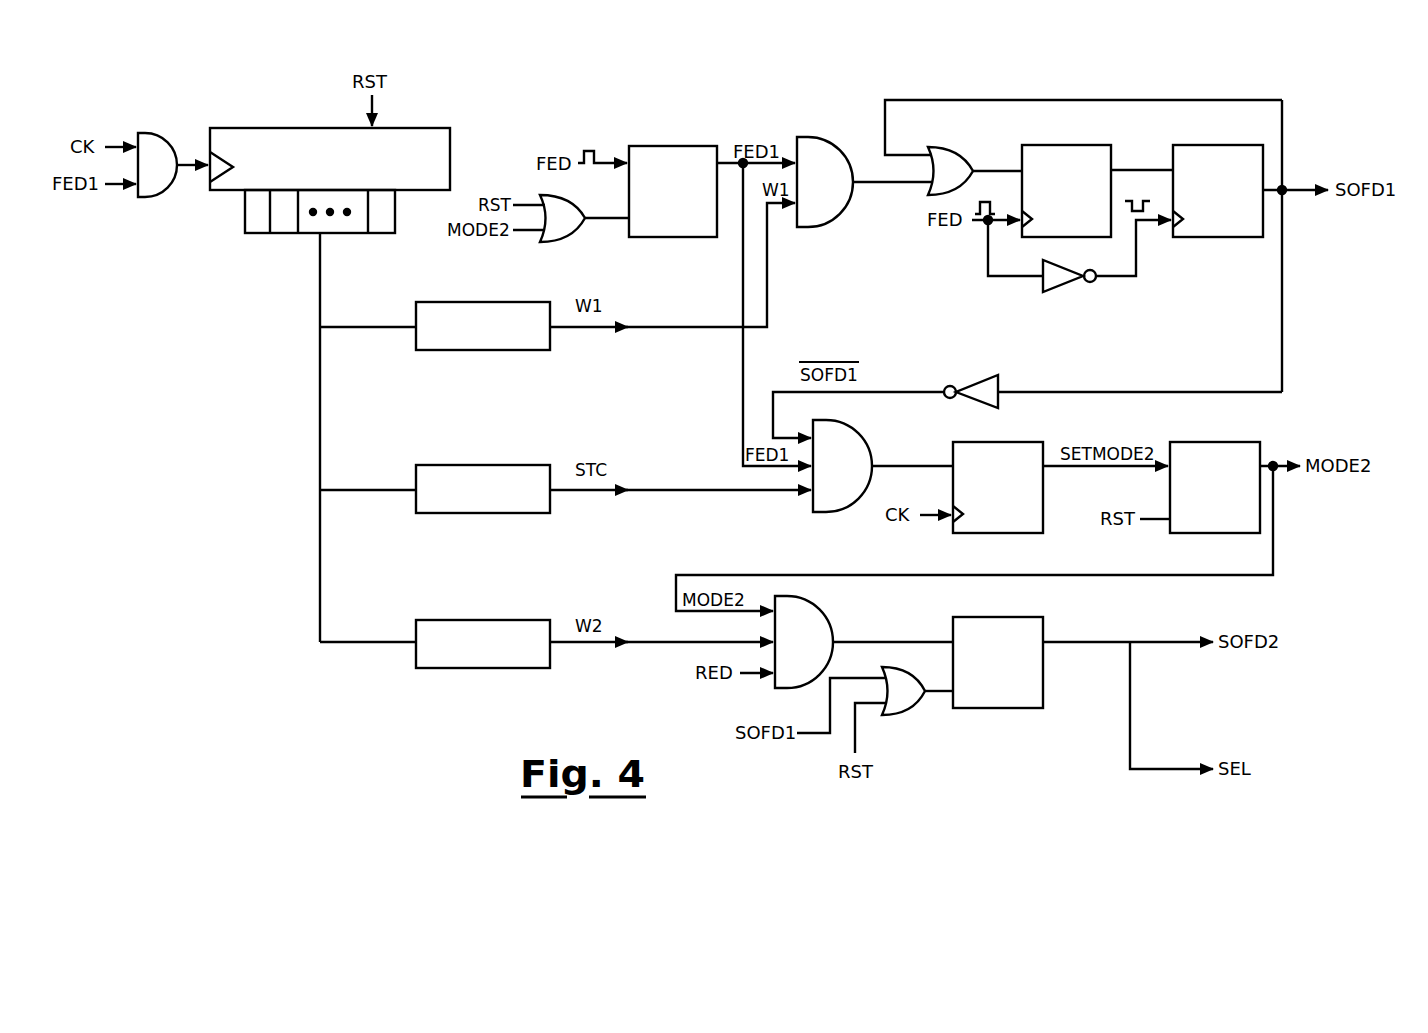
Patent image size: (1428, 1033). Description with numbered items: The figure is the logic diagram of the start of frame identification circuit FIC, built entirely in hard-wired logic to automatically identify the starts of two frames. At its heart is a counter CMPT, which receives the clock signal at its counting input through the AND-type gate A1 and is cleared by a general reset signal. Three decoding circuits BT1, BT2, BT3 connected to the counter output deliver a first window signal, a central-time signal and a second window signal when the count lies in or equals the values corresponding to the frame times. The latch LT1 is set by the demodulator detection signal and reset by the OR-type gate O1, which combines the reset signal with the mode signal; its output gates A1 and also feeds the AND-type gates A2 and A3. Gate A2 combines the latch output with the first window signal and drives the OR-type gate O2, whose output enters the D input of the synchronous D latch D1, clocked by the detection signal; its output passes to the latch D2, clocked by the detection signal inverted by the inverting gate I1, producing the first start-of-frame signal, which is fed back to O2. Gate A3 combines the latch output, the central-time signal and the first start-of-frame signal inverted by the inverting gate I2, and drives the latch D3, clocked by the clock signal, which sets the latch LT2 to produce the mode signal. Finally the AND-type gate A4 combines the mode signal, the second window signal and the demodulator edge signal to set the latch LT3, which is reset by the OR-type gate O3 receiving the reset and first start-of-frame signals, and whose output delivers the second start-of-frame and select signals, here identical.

The AND-type gate A1 is at (157, 165).
The counter CMPT is at (330, 180).
The latch LT1 is at (673, 191).
The OR-type gate O1 is at (562, 218).
The AND-type gate A2 is at (825, 182).
The OR-type gate O2 is at (950, 171).
The synchronous D latch D1 is at (1066, 191).
The synchronous D latch D2 is at (1218, 191).
The inverting gate I1 is at (1062, 293).
The inverting gate I2 is at (983, 376).
The AND-type gate A3 is at (842, 466).
The synchronous D latch D3 is at (998, 487).
The latch LT2 is at (1215, 487).
The AND-type gate A4 is at (804, 642).
The OR-type gate O3 is at (903, 691).
The latch LT3 is at (998, 662).
The decoding circuit BT1 is at (505, 352).
The decoding circuit BT2 is at (505, 515).
The decoding circuit BT3 is at (505, 670).
The start of frame identification circuit FIC is at (253, 557).